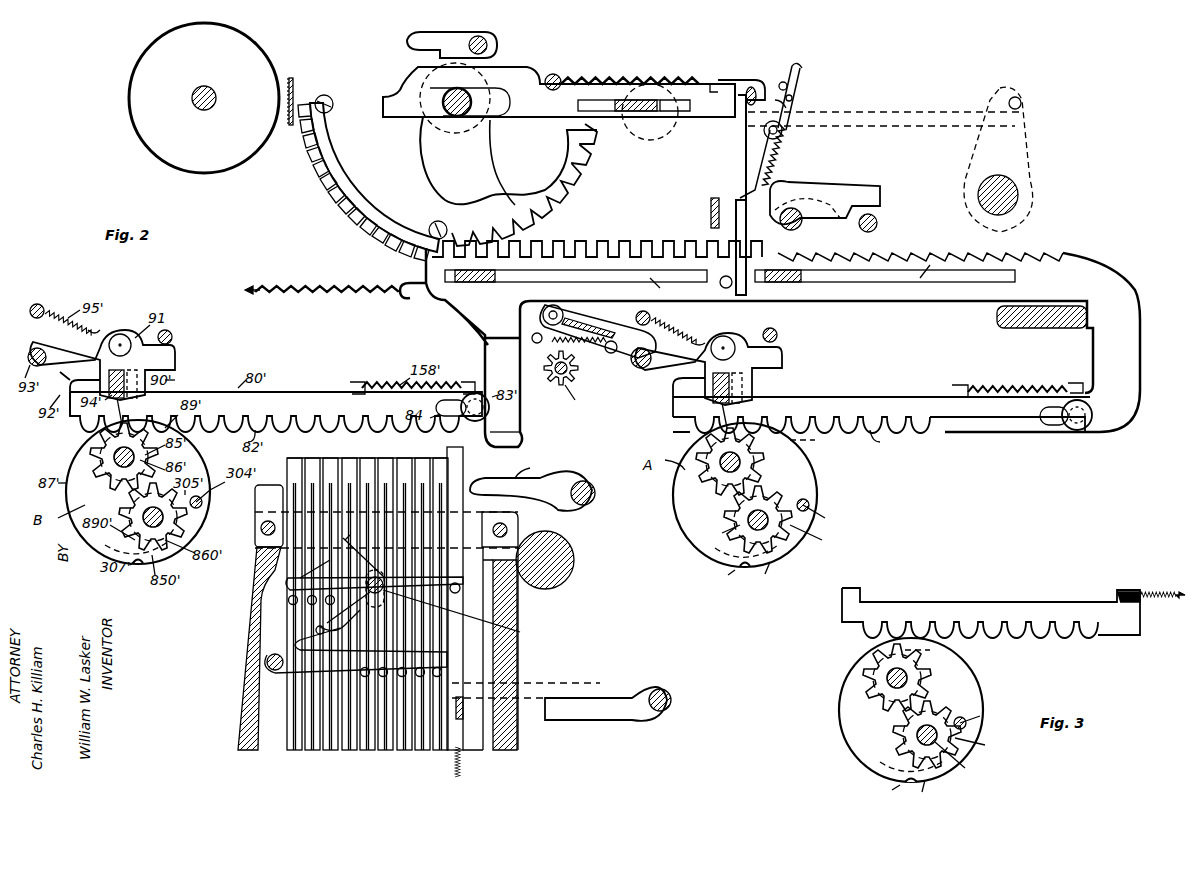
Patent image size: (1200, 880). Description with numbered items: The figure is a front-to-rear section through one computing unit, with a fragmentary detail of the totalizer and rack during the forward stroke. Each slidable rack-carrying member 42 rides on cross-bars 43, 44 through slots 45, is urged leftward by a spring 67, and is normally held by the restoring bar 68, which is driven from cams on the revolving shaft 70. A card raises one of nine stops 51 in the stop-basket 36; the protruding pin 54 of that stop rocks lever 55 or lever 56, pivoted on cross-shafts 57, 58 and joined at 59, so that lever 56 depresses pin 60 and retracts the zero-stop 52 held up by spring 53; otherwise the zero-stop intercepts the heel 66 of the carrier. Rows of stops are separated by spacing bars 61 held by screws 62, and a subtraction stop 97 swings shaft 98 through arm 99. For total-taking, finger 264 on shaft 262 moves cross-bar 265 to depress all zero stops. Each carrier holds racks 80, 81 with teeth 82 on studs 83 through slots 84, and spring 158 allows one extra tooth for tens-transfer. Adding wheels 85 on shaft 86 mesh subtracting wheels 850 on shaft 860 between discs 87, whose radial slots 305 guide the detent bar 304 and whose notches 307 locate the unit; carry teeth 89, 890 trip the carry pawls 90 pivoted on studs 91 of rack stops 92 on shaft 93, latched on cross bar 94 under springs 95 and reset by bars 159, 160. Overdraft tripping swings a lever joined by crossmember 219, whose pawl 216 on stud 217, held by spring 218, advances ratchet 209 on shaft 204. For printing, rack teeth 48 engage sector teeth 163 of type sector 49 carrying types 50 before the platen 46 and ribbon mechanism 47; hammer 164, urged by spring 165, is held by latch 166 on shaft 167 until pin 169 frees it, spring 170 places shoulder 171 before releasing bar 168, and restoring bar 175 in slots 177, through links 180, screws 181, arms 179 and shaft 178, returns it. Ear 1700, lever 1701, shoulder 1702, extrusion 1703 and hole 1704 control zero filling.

In FIG. 2, the stop-basket 36 is at (236, 738).
In FIG. 2, the rack-carrying member 42 is at (1070, 250).
In FIG. 2, the cross-bar 43 is at (470, 282).
In FIG. 2, the cross-bar 44 is at (790, 282).
In FIG. 2, the slot 45 is at (799, 275).
In FIG. 2, the platen 46 is at (230, 172).
In FIG. 2, the ribbon mechanism 47 is at (292, 82).
In FIG. 2, the rack teeth 48 is at (580, 243).
In FIG. 2, the type sector 49 is at (508, 164).
In FIG. 2, the types 50 is at (334, 200).
In FIG. 2, the stop 51 is at (370, 458).
In FIG. 2, the zero-stop 52 is at (463, 480).
In FIG. 2, the spring 53 is at (462, 775).
In FIG. 2, the pin 54 is at (393, 758).
In FIG. 2, the lever 55 is at (295, 668).
In FIG. 2, the lever 56 is at (285, 582).
In FIG. 2, the cross-shaft 57 is at (267, 662).
In FIG. 2, the cross-shaft 58 is at (453, 606).
In FIG. 2, the connection 59 is at (316, 630).
In FIG. 2, the pin 60 is at (460, 590).
In FIG. 2, the spacing bar 61 is at (255, 500).
In FIG. 2, the screw 62 is at (528, 532).
In FIG. 2, the heel 66 is at (505, 439).
In FIG. 2, the spring 67 is at (320, 294).
In FIG. 2, the restoring bar 68 is at (1020, 328).
In FIG. 2, the revolving shaft 70 is at (573, 570).
In FIG. 2, the rack 80 is at (722, 392).
In FIG. 2, the rack 81 is at (850, 395).
In FIG. 3, the rack 81 is at (990, 598).
In FIG. 2, the teeth 82 is at (883, 444).
In FIG. 3, the teeth 82 is at (1030, 637).
In FIG. 2, the stud 83 is at (1080, 430).
In FIG. 2, the slot 84 is at (1049, 425).
In FIG. 2, the adding wheel 85 is at (715, 478).
In FIG. 3, the adding wheel 85 is at (915, 668).
In FIG. 2, the shaft 86 is at (760, 462).
In FIG. 3, the shaft 86 is at (915, 688).
In FIG. 2, the end plate or disc 87 is at (818, 492).
In FIG. 3, the end plate or disc 87 is at (911, 710).
In FIG. 2, the carry tooth 89 is at (801, 435).
In FIG. 3, the carry tooth 89 is at (950, 655).
In FIG. 2, the carry pawl 90 is at (780, 382).
In FIG. 2, the stud 91 is at (738, 340).
In FIG. 2, the rack stop 92 is at (668, 400).
In FIG. 2, the shaft 93 is at (642, 368).
In FIG. 2, the cross bar 94 is at (716, 398).
In FIG. 2, the spring 95 is at (672, 322).
In FIG. 2, the subtraction stop 97 is at (477, 750).
In FIG. 2, the shaft 98 is at (583, 490).
In FIG. 2, the arm 99 is at (530, 465).
In FIG. 2, the spring 158 is at (1020, 389).
In FIG. 3, the spring 158 is at (1151, 584).
In FIG. 2, the resetting bar 159 is at (777, 338).
In FIG. 2, the resetting bar 160 is at (172, 337).
In FIG. 2, the sector teeth 163 is at (600, 150).
In FIG. 2, the printing hammer 164 is at (535, 68).
In FIG. 2, the spring 165 is at (635, 75).
In FIG. 2, the latch 166 is at (762, 70).
In FIG. 2, the shaft 167 is at (750, 110).
In FIG. 2, the releasing bar 168 is at (710, 212).
In FIG. 2, the pin 169 is at (728, 276).
In FIG. 2, the spring 170 is at (775, 160).
In FIG. 2, the shoulder 171 is at (732, 185).
In FIG. 2, the restoring bar 175 is at (650, 130).
In FIG. 2, the slot 177 is at (582, 112).
In FIG. 2, the restoring shaft 178 is at (1018, 190).
In FIG. 2, the arm 179 is at (1035, 148).
In FIG. 2, the link 180 is at (858, 108).
In FIG. 2, the shoulder screw 181 is at (1022, 103).
In FIG. 2, the shaft 204 is at (570, 372).
In FIG. 2, the ratchet wheel 209 is at (585, 400).
In FIG. 2, the pawl 216 is at (540, 315).
In FIG. 2, the stud 217 is at (565, 300).
In FIG. 2, the spring 218 is at (590, 345).
In FIG. 2, the crossmember 219 is at (598, 320).
In FIG. 2, the shaft 262 is at (672, 705).
In FIG. 2, the finger 264 is at (570, 697).
In FIG. 2, the cross-bar 265 is at (463, 710).
In FIG. 2, the aligning or detent bar 304 is at (828, 516).
In FIG. 3, the aligning or detent bar 304 is at (987, 714).
In FIG. 2, the radial slot 305 is at (797, 500).
In FIG. 3, the radial slot 305 is at (962, 716).
In FIG. 2, the notch 307 is at (717, 575).
In FIG. 3, the notch 307 is at (880, 789).
In FIG. 2, the subtracting wheel 850 is at (820, 537).
In FIG. 3, the subtracting wheel 850 is at (985, 745).
In FIG. 2, the shaft 860 is at (717, 533).
In FIG. 3, the shaft 860 is at (965, 760).
In FIG. 2, the carry tooth 890 is at (769, 575).
In FIG. 3, the carry tooth 890 is at (929, 792).
In FIG. 2, the ear 1700 is at (800, 58).
In FIG. 2, the lever 1701 is at (790, 72).
In FIG. 2, the shoulder 1702 is at (792, 96).
In FIG. 2, the extrusion 1703 is at (786, 104).
In FIG. 2, the hole 1704 is at (800, 128).